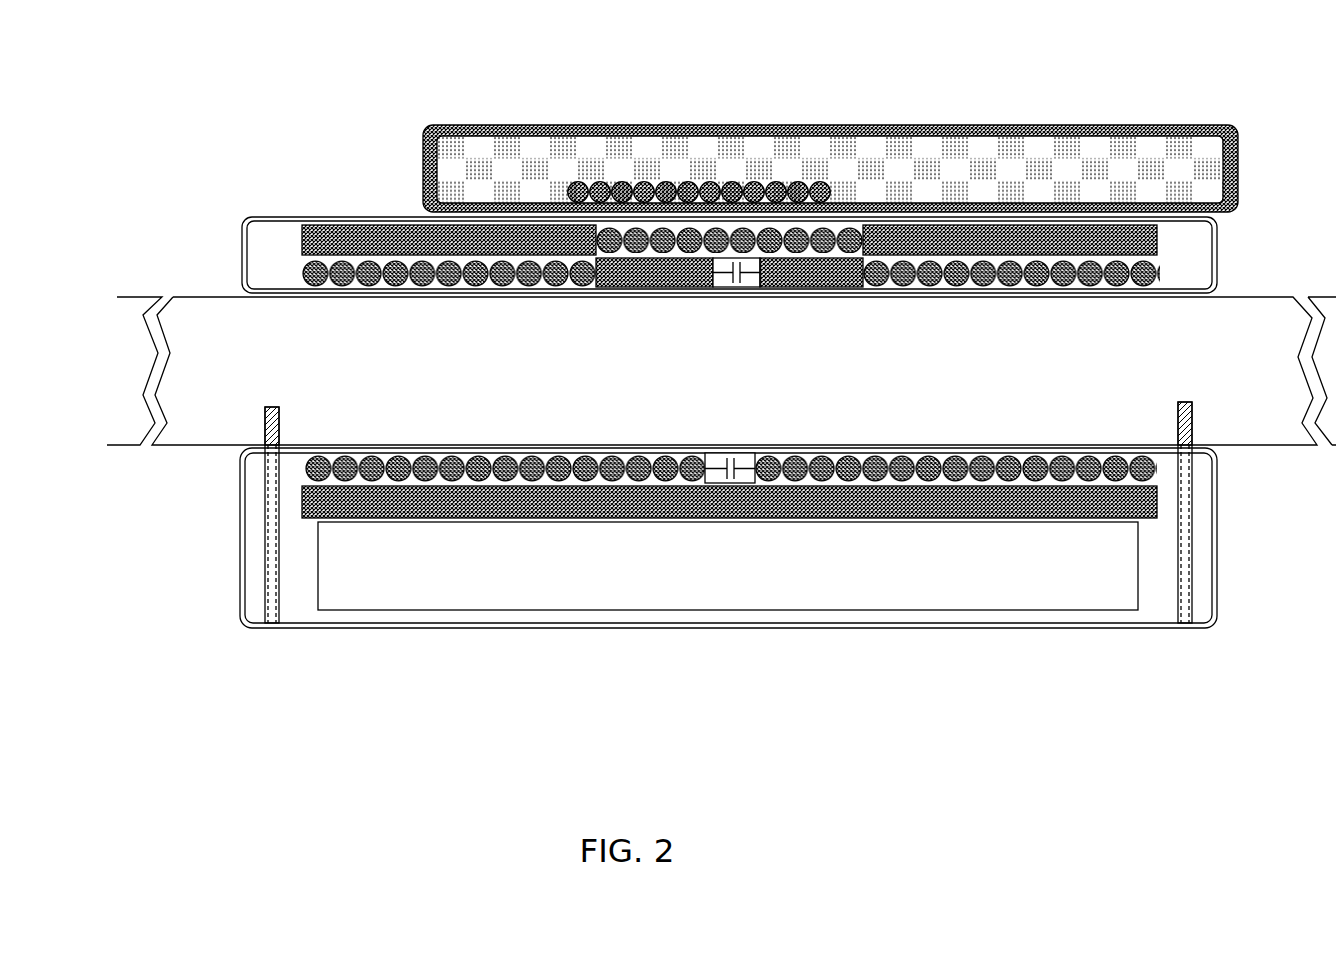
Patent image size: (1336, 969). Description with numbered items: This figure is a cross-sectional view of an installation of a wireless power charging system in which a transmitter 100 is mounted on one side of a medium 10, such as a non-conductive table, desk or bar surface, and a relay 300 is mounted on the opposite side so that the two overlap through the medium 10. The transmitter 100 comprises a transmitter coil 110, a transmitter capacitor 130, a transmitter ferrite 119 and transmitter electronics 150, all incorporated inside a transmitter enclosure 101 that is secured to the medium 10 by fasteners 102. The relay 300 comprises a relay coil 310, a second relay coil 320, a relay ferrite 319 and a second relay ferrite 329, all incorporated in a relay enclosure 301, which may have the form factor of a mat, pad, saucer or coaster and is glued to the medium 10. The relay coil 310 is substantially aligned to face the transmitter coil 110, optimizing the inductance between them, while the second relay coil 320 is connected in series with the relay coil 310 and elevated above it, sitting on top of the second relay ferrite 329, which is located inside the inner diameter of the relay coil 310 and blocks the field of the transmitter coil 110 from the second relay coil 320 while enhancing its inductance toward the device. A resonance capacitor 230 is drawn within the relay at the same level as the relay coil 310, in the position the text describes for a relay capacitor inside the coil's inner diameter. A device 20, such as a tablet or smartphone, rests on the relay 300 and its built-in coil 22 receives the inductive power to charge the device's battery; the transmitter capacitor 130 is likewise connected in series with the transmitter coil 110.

The device 20 is at (620, 125).
The built-in coil 22 is at (763, 178).
The relay 300 is at (686, 252).
The relay enclosure 301 is at (330, 215).
The relay ferrite 319 is at (393, 223).
The relay coil 310 is at (470, 290).
The second relay coil 320 is at (690, 289).
The receiver pad capacitor 230 is at (725, 288).
The second relay ferrite 329 is at (830, 290).
The medium 10 is at (185, 447).
The transmitter 100 is at (705, 537).
The transmitter enclosure 101 is at (242, 558).
The fasteners 102 is at (268, 622).
The transmitter coil 110 is at (622, 450).
The transmitter capacitor 130 is at (752, 458).
The transmitter ferrite 119 is at (1160, 492).
The transmitter electronics 150 is at (518, 612).